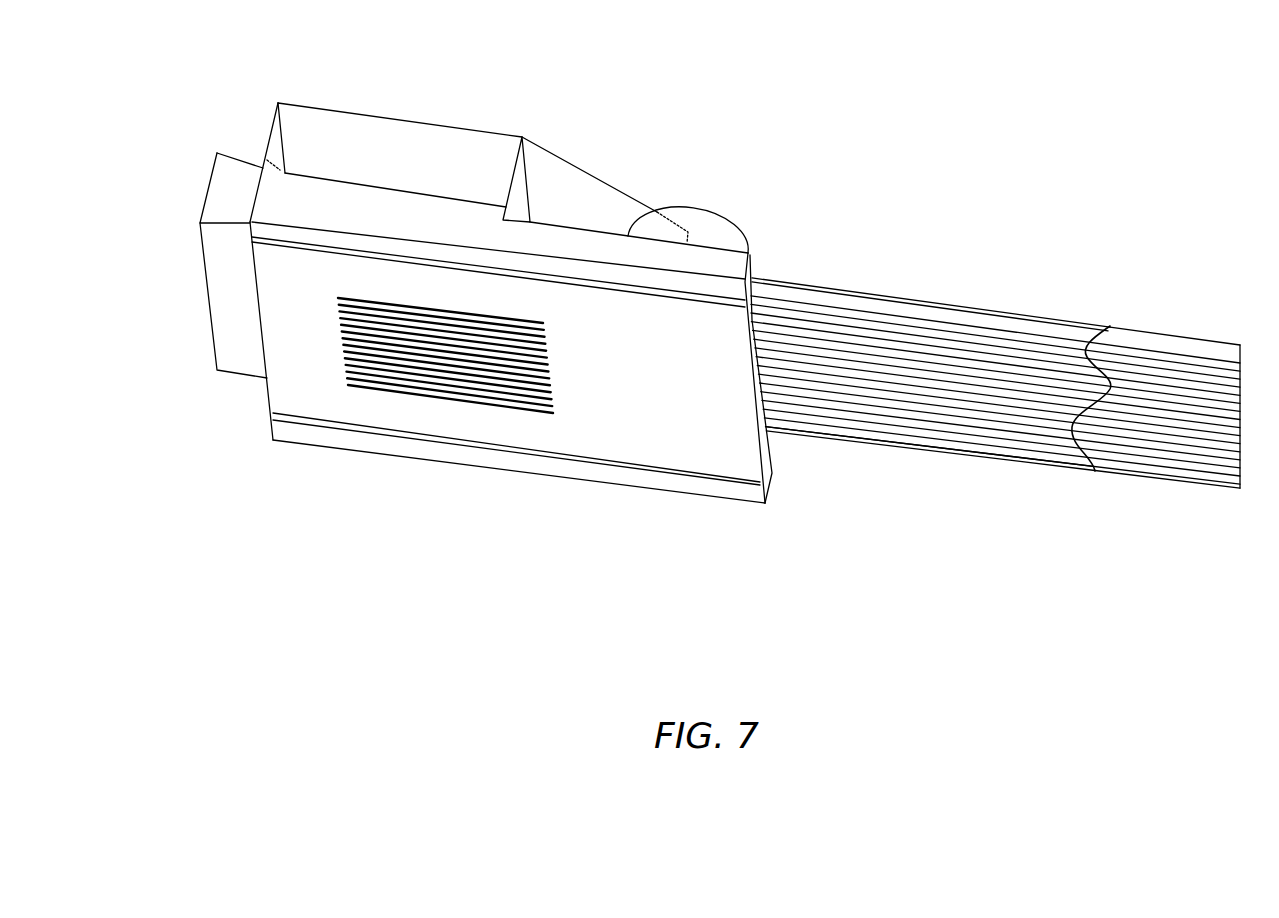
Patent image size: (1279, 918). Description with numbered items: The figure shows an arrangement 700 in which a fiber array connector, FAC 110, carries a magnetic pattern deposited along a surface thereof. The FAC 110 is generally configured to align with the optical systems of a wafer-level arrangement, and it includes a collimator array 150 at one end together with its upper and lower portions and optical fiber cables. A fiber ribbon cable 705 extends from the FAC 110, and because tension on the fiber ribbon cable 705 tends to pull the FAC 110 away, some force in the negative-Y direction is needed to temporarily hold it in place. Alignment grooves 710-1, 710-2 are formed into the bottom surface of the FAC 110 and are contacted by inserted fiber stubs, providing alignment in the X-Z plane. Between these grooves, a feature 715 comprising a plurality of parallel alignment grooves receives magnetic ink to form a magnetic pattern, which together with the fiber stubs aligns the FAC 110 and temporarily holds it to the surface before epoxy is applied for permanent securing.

The arrangement 700 is at (683, 61).
The fiber array connector (FAC) 110 is at (270, 136).
The collimator array 150 is at (206, 195).
The alignment groove 710-1 is at (285, 242).
The alignment groove 710-2 is at (394, 433).
The feature 715 is at (339, 348).
The fiber ribbon cable 705 is at (930, 299).